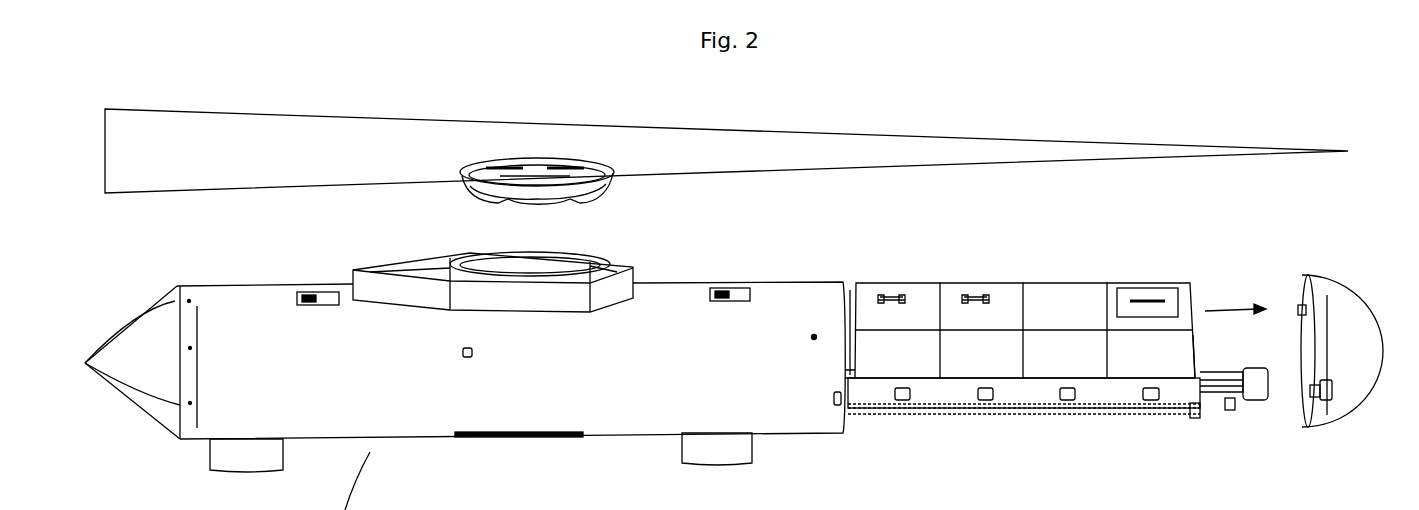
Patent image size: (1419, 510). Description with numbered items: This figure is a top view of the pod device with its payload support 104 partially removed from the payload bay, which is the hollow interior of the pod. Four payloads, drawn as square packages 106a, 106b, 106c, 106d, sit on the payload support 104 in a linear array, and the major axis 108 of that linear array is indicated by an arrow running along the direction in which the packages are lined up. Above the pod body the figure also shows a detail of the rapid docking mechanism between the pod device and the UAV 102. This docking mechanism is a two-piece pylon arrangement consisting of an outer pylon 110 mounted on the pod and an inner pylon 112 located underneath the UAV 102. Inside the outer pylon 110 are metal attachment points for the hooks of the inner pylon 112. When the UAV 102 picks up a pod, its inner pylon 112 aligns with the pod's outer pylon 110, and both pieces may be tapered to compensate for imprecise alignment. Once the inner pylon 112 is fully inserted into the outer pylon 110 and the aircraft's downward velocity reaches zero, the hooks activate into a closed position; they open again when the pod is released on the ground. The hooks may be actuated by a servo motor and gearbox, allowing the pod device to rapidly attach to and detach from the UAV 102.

The UAV 102 is at (358, 108).
The payload support 104 is at (1056, 358).
The payload 106a is at (908, 272).
The payload 106b is at (990, 272).
The payload 106c is at (1084, 272).
The payload 106d is at (1161, 272).
The major axis of the linear array 108 is at (1258, 303).
The outer pylon 110 is at (367, 248).
The inner pylon 112 is at (596, 212).